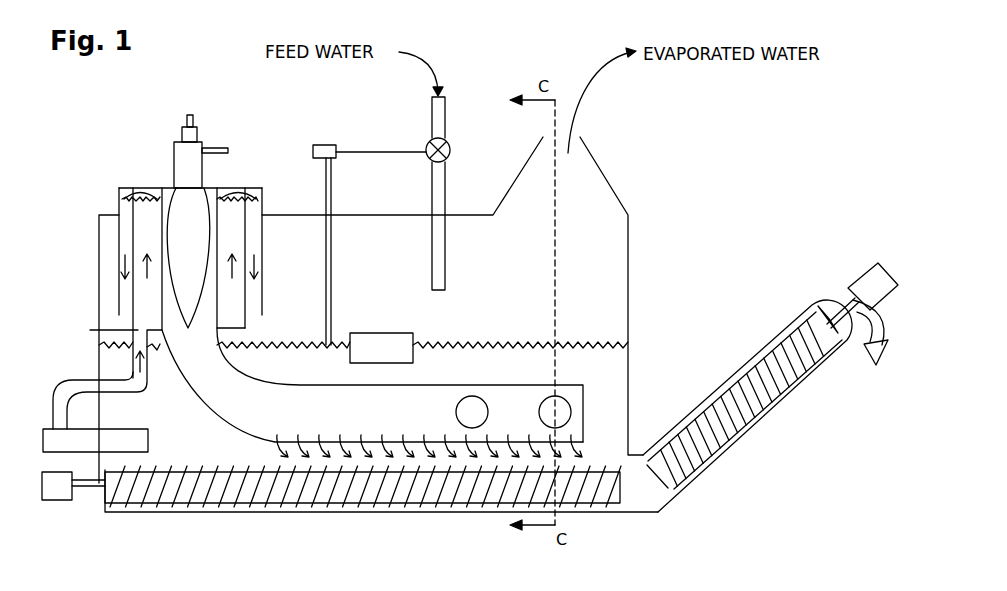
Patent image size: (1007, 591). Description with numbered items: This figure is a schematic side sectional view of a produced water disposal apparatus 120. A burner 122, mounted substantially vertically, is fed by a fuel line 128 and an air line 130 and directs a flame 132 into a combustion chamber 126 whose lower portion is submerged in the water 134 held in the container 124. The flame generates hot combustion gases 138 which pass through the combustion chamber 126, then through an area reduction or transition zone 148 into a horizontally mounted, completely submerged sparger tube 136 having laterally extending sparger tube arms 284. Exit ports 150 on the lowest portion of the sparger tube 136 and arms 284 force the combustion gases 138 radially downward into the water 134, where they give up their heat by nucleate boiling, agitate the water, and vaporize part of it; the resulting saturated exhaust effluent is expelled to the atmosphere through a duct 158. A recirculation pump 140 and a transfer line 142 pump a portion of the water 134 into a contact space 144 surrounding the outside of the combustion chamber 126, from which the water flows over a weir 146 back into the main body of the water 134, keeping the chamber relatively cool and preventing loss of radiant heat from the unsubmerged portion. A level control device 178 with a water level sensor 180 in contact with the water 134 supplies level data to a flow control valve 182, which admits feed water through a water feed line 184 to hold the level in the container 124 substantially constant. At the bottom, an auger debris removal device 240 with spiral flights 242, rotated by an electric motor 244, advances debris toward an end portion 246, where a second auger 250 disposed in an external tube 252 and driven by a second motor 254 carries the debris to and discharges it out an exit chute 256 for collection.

The produced water disposal apparatus 120 is at (708, 222).
The burner 122 is at (183, 145).
The container 124 is at (514, 261).
The combustion chamber 126 is at (218, 287).
The fuel line 128 is at (220, 145).
The air line 130 is at (187, 123).
The flame 132 is at (203, 254).
The water 134 is at (199, 447).
The sparger tube 136 is at (412, 385).
The combustion gases 138 is at (213, 364).
The recirculation pump 140 is at (112, 450).
The transfer line 142 is at (97, 331).
The contact space 144 is at (148, 230).
The weir 146 is at (130, 217).
The transition zone 148 is at (246, 406).
The exit ports 150 is at (278, 437).
The duct 158 is at (590, 158).
The level control device 178 is at (327, 145).
The water level sensor 180 is at (397, 360).
The flow control valve 182 is at (429, 142).
The water feed line 184 is at (438, 188).
The auger debris removal device 240 is at (423, 490).
The flights 242 is at (597, 495).
The electric motor 244 is at (57, 488).
The end portion 246 is at (638, 495).
The second auger 250 is at (725, 420).
The external tube 252 is at (763, 350).
The second motor 254 is at (868, 288).
The exit chute 256 is at (872, 342).
The sparger tube arms 284 is at (555, 412).